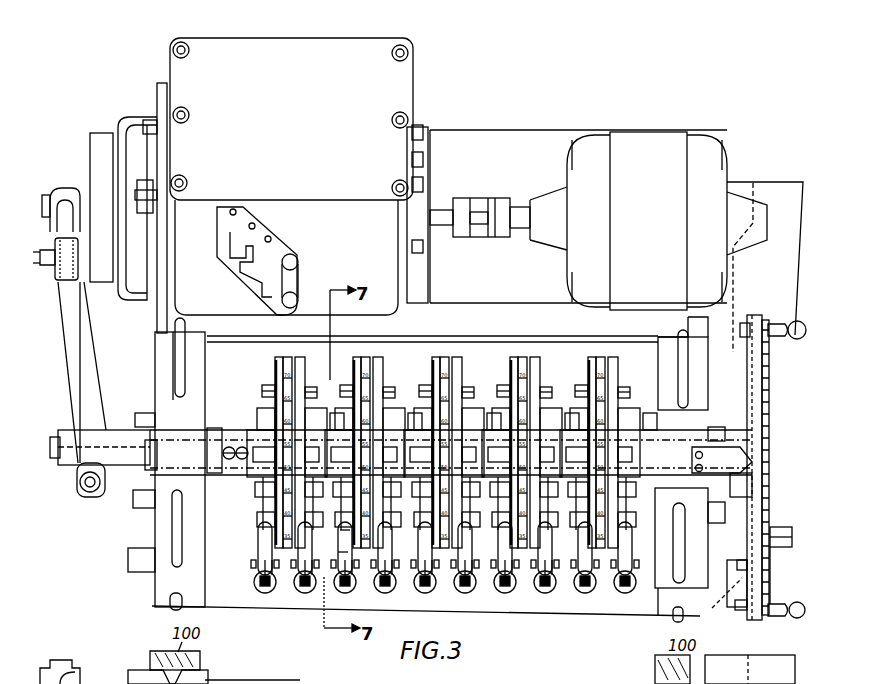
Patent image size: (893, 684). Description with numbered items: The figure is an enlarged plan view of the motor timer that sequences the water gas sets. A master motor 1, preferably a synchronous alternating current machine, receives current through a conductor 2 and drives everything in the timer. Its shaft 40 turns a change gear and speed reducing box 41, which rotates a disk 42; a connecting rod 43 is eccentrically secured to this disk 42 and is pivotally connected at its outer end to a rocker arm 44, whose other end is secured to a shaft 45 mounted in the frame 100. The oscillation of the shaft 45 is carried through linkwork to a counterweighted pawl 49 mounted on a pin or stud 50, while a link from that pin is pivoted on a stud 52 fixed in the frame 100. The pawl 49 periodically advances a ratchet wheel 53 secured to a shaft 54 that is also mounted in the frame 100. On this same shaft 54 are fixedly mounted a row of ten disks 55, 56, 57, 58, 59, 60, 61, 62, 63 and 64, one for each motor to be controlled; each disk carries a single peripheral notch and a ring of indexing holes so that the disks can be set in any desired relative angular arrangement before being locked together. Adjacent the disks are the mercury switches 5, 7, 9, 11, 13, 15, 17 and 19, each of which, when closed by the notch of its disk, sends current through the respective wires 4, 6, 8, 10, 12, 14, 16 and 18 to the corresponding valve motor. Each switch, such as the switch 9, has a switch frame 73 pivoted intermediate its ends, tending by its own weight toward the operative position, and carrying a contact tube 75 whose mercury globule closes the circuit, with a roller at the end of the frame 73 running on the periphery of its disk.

The master motor 1 is at (660, 143).
The conductor 2 is at (273, 580).
The wire 4 is at (274, 590).
The switch 5 is at (263, 593).
The wire 6 is at (312, 590).
The switch 7 is at (304, 593).
The wire 8 is at (352, 590).
The switch 9 is at (343, 595).
The wire 10 is at (395, 590).
The switch 11 is at (385, 595).
The wire 12 is at (435, 590).
The switch 13 is at (426, 595).
The wire 14 is at (475, 590).
The switch 15 is at (466, 595).
The wire 16 is at (515, 590).
The switch 17 is at (506, 595).
The wire 18 is at (555, 590).
The switch 19 is at (546, 595).
The shaft 40 is at (518, 210).
The change gear and speed reducing box 41 is at (286, 257).
The disk 42 is at (97, 135).
The connecting rod 43 is at (60, 228).
The rocker arm 44 is at (77, 450).
The shaft 45 is at (118, 430).
The counterweighted pawl 49 is at (770, 558).
The pin or stud 50 is at (788, 530).
The stud 52 is at (726, 608).
The ratchet wheel 53 is at (768, 414).
The shaft 54 is at (147, 458).
The disk 55 is at (277, 360).
The disk 56 is at (301, 362).
The disk 57 is at (355, 362).
The disk 58 is at (379, 362).
The disk 59 is at (434, 362).
The disk 60 is at (458, 362).
The disk 61 is at (512, 362).
The disk 62 is at (536, 362).
The disk 63 is at (590, 362).
The disk 64 is at (614, 372).
The switch frame 73 is at (343, 536).
The contact tube 75 is at (342, 553).
The frame 100 is at (160, 517).